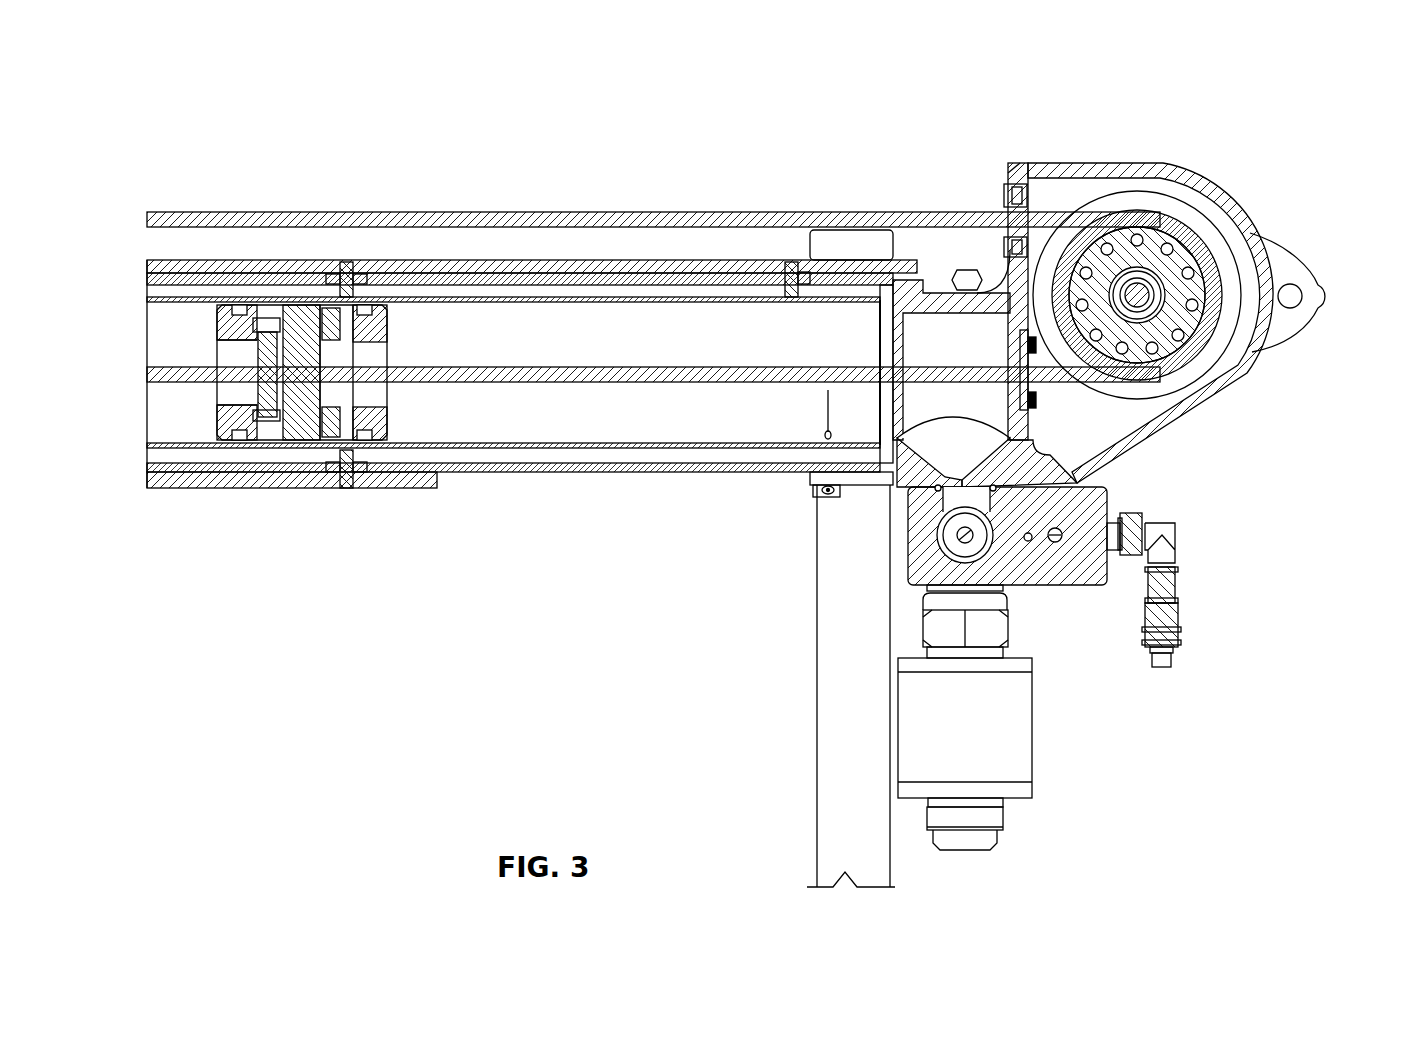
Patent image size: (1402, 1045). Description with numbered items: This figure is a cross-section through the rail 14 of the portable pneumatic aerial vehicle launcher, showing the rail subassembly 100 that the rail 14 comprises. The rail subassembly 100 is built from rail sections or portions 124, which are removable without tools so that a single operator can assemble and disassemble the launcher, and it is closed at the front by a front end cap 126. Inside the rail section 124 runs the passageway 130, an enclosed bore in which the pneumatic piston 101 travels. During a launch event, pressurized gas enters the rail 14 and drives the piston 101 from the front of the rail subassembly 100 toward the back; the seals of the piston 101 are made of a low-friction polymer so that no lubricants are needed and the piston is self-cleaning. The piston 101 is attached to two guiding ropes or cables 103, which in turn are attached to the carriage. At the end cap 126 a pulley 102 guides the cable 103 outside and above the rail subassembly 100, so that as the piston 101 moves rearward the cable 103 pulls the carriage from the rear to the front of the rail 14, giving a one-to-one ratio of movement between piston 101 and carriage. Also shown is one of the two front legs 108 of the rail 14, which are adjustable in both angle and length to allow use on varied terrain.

The rail 14 is at (727, 128).
The rail subassembly 100 is at (590, 157).
The piston 101 is at (218, 430).
The pulley 102 is at (1205, 330).
The cable 103 is at (463, 382).
The front leg 108 is at (815, 688).
The rail section 124 is at (427, 262).
The front end cap 126 is at (1248, 150).
The passageway 130 is at (570, 420).